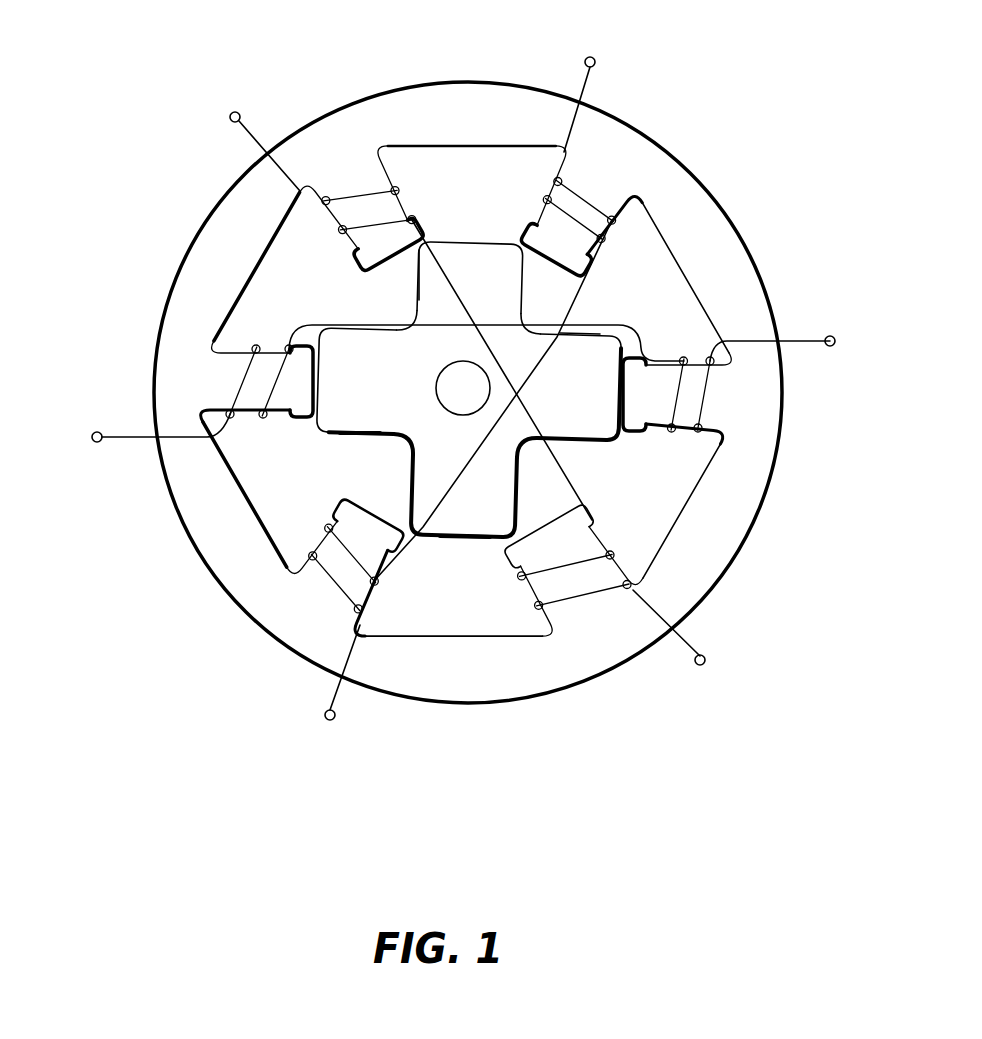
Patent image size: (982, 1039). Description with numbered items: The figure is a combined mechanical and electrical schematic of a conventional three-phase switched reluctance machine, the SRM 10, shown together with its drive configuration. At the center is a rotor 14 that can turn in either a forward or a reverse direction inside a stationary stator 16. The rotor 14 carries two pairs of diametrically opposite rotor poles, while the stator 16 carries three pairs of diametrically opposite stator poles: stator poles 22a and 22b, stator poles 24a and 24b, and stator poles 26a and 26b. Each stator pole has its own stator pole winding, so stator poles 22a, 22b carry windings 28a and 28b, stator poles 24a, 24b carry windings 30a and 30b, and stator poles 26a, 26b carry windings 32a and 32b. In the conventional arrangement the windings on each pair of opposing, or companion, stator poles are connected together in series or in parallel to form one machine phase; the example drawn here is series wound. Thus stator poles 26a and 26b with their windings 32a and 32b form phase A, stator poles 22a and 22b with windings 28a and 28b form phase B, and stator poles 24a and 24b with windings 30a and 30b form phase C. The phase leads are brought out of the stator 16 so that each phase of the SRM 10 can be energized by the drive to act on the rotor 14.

The switched reluctance machine 10 is at (463, 396).
The rotor 14 is at (484, 389).
The stator 16 is at (487, 381).
The stator pole 22a is at (219, 424).
The stator pole 22b is at (736, 323).
The stator pole 24a is at (318, 196).
The stator pole 24b is at (638, 578).
The stator pole 26a is at (576, 164).
The stator pole 26b is at (347, 591).
The stator pole winding 28a is at (262, 416).
The stator pole winding 28b is at (705, 397).
The stator pole winding 30a is at (342, 203).
The stator pole winding 30b is at (665, 572).
The stator pole winding 32a is at (545, 198).
The stator pole winding 32b is at (320, 645).